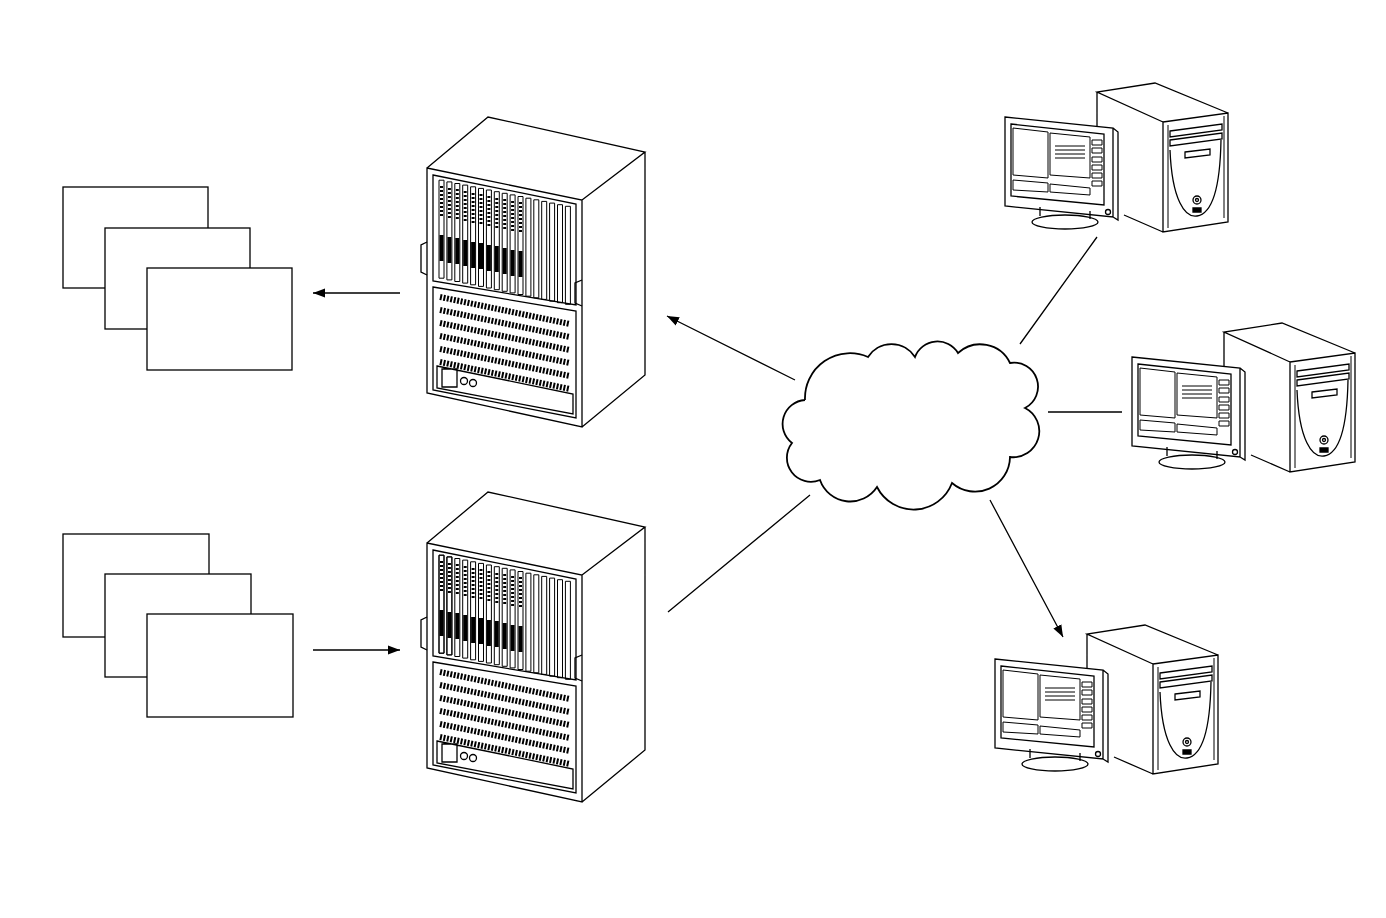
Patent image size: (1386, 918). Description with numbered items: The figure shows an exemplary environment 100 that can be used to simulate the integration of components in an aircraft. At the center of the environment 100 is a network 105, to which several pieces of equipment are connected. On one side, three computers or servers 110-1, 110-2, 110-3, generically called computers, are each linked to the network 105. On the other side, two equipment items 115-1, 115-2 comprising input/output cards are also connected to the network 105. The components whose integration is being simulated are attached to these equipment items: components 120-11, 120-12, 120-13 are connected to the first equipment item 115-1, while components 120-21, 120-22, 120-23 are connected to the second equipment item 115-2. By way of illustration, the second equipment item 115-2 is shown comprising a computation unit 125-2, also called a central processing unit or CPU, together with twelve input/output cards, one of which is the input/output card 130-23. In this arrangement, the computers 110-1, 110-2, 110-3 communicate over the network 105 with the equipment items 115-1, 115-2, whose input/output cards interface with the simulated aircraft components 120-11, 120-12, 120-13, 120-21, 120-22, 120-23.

The environment 100 is at (344, 116).
The network 105 is at (925, 434).
The computer 110-1 is at (1167, 102).
The computer 110-2 is at (1290, 337).
The computer 110-3 is at (1145, 753).
The equipment item 115-1 is at (600, 153).
The equipment item 115-2 is at (588, 528).
The component 120-11 is at (157, 217).
The component 120-12 is at (199, 258).
The component 120-13 is at (241, 299).
The component 120-21 is at (157, 564).
The component 120-22 is at (199, 604).
The component 120-23 is at (241, 644).
The computation unit 125-2 is at (441, 598).
The input/output card 130-23 is at (447, 583).